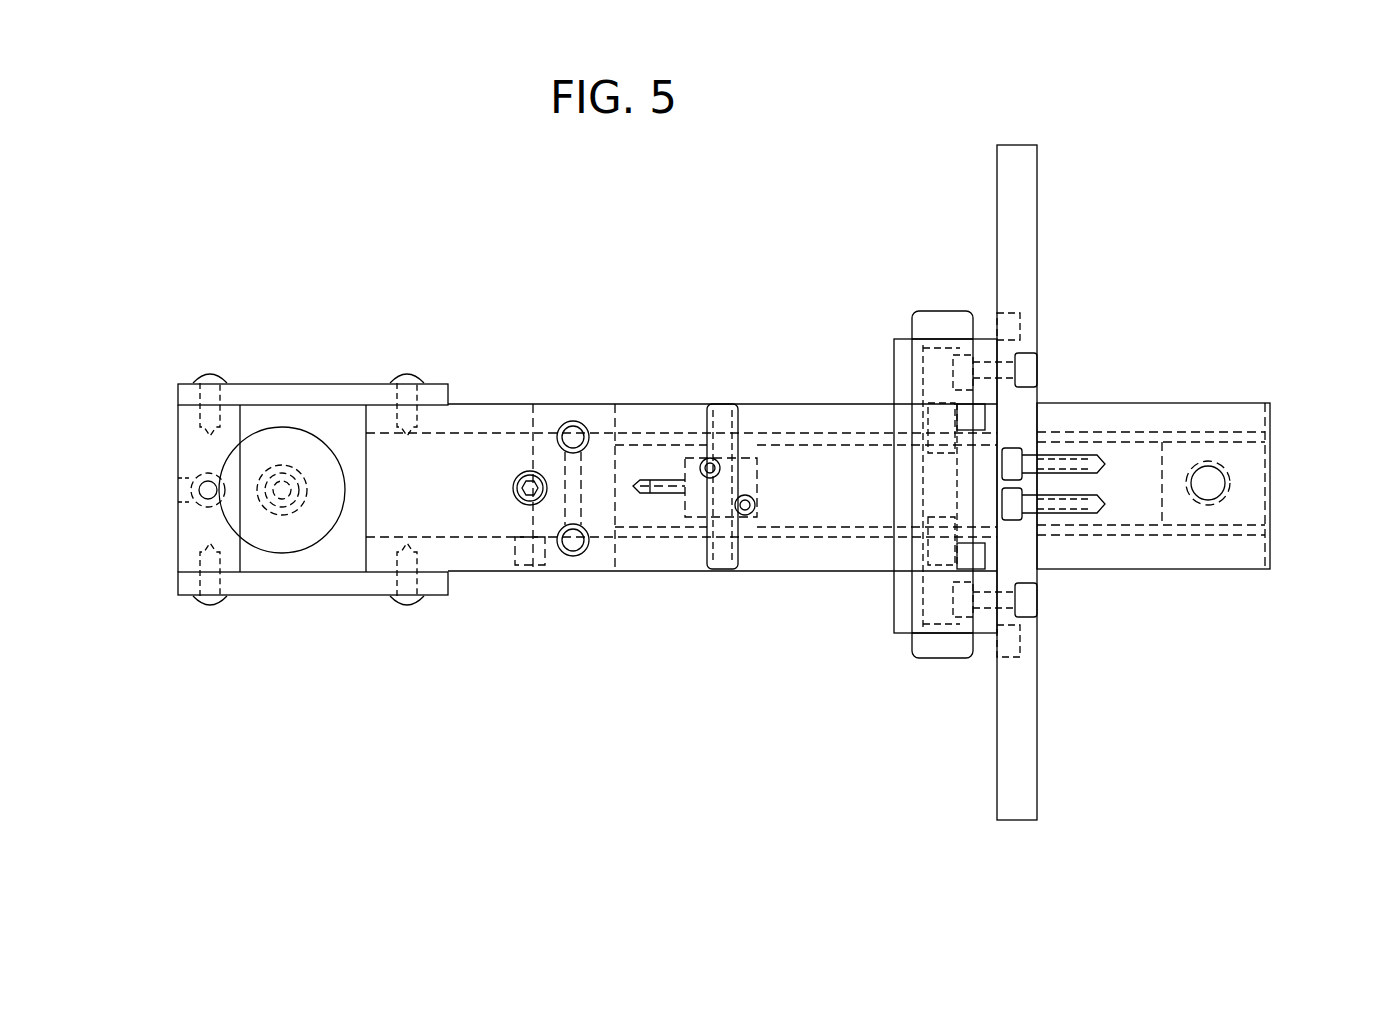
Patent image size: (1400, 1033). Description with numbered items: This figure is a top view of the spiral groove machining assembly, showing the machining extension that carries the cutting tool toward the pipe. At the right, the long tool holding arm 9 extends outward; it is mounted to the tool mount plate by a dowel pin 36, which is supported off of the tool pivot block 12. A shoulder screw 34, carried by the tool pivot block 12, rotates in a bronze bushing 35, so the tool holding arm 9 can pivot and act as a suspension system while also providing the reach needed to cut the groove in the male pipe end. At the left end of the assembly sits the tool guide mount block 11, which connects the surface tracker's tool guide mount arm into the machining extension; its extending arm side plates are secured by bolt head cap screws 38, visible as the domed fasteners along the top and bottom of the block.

The tool holding arm 9 is at (1272, 478).
The tool guide mount block 11 is at (178, 543).
The tool pivot block 12 is at (890, 607).
The shoulder screw 34 is at (940, 308).
The bronze bushing 35 is at (905, 360).
The dowel pin 36 is at (703, 414).
The bolt head cap screws 38 is at (402, 607).